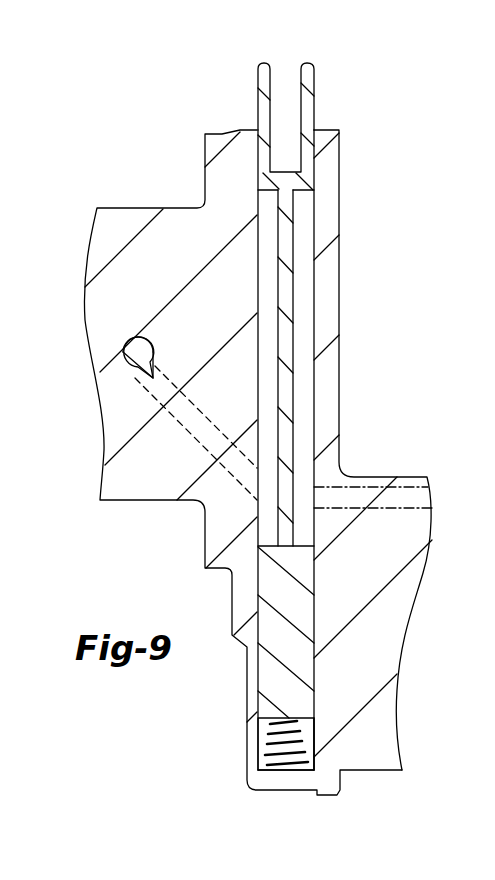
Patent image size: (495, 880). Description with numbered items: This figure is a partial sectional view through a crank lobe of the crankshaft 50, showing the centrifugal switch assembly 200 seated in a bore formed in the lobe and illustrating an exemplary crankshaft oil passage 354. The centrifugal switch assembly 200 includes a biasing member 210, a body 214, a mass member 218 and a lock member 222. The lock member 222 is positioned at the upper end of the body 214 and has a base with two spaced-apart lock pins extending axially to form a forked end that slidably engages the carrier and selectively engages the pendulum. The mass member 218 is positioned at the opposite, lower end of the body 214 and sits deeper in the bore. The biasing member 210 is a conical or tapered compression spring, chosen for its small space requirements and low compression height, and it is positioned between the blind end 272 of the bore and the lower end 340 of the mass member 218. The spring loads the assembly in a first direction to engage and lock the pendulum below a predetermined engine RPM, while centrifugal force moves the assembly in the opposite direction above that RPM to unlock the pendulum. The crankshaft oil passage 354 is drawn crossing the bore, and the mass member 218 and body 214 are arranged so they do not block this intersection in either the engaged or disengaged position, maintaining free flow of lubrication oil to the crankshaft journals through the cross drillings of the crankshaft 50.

The crankshaft 50 is at (318, 464).
The centrifugal switch assembly 200 is at (380, 268).
The lock member 222 is at (315, 88).
The body 214 is at (289, 389).
The mass member 218 is at (300, 612).
The crankshaft oil passage 354 is at (188, 432).
The lower end of the mass member 340 is at (262, 722).
The blind end 272 is at (303, 759).
The biasing member 210 is at (311, 752).